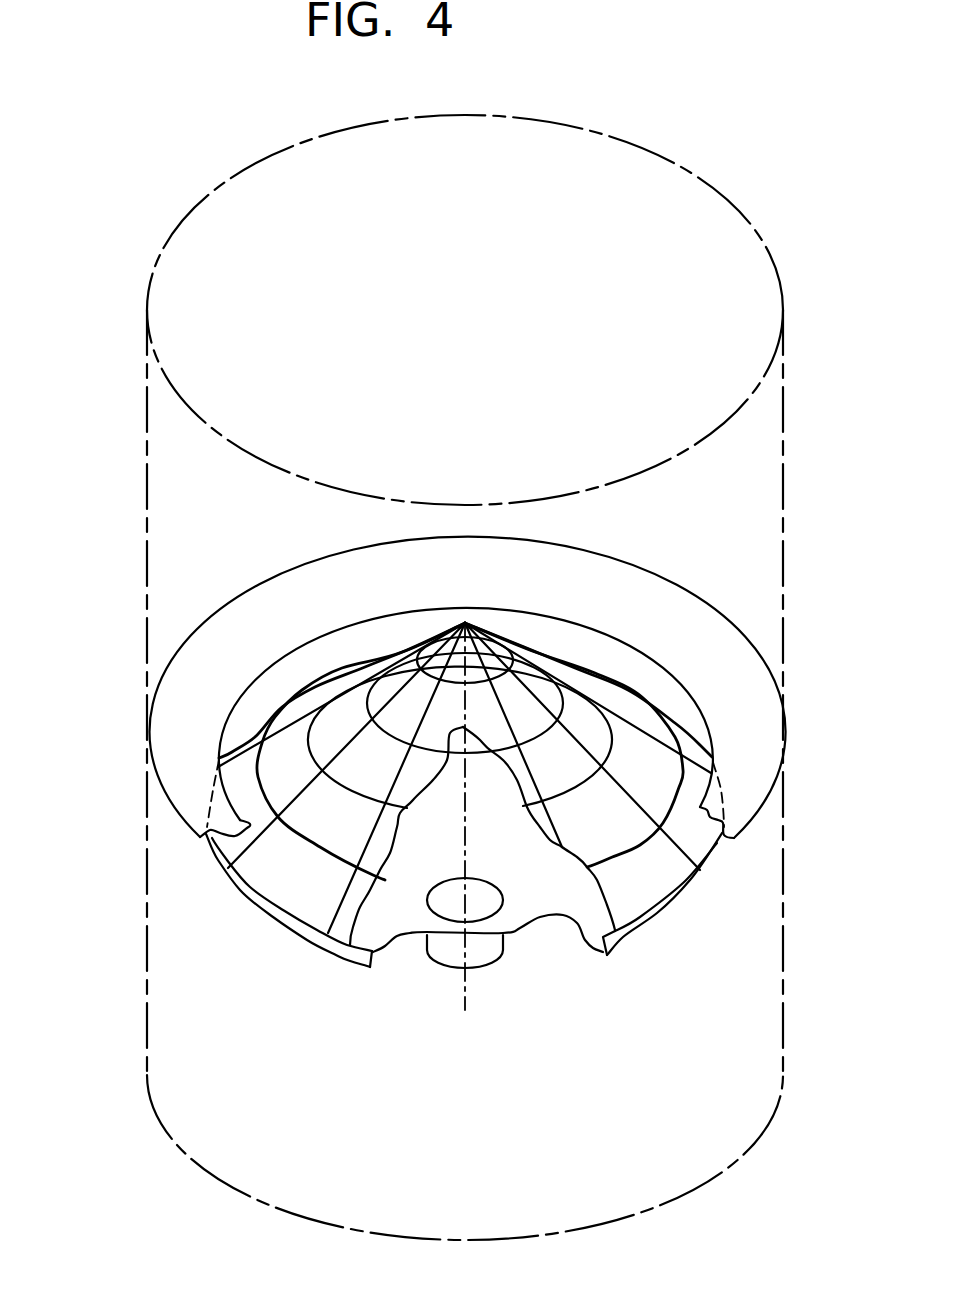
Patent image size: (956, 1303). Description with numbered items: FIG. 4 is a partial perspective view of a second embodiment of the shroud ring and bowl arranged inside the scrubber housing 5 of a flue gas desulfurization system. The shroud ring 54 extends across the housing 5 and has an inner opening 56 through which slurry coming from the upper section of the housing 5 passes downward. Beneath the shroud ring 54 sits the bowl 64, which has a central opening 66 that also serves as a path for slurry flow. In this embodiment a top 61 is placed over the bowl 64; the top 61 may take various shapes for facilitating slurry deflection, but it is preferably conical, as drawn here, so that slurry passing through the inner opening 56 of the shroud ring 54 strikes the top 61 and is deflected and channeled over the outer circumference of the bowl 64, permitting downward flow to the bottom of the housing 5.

The housing 5 is at (122, 379).
The shroud ring 54 is at (182, 722).
The inner opening 56 is at (633, 672).
The top 61 is at (395, 667).
The bowl 64 is at (288, 923).
The central opening 66 is at (457, 902).